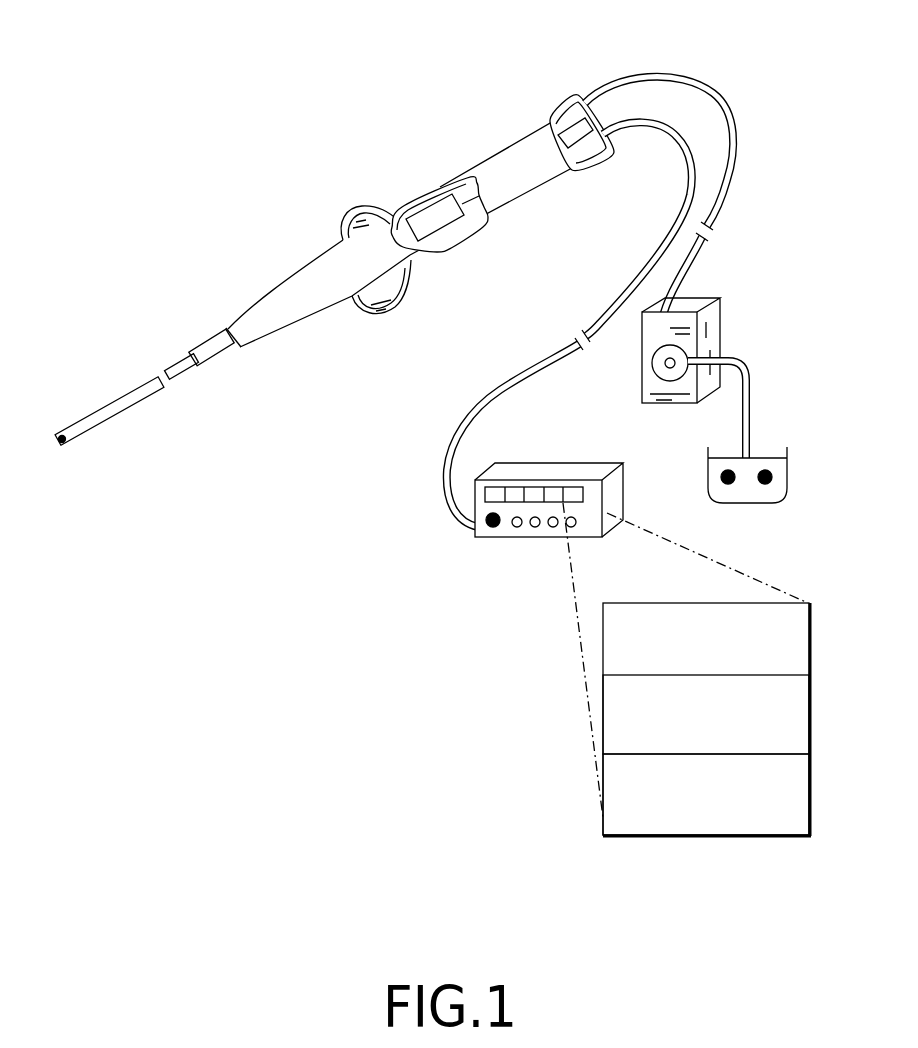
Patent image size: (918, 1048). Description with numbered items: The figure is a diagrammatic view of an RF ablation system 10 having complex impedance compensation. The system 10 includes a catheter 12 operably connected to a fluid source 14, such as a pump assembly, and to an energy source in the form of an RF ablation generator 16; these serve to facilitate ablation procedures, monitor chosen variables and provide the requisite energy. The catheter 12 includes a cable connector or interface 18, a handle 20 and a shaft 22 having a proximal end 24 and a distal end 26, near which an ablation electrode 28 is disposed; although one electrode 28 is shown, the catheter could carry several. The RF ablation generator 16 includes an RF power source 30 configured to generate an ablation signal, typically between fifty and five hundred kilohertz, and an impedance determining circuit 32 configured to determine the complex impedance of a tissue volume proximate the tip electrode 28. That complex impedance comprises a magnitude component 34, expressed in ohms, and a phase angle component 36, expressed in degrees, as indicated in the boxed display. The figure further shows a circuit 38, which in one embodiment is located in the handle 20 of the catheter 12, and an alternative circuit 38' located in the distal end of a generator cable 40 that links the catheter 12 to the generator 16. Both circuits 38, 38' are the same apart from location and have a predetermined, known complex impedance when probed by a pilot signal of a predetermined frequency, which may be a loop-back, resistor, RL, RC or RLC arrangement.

The system 10 is at (153, 159).
The catheter 12 is at (392, 147).
The fluid source 14 is at (734, 275).
The RF ablation generator 16 is at (579, 437).
The cable connector 18 is at (553, 92).
The handle 20 is at (465, 145).
The shaft 22 is at (170, 343).
The proximal end 24 is at (196, 398).
The distal end 26 is at (90, 471).
The ablation electrode 28 is at (54, 437).
The RF power source 30 is at (517, 470).
The impedance determining circuit 32 is at (593, 472).
The magnitude component 34 is at (803, 707).
The phase angle component 36 is at (803, 783).
The circuit 38 is at (435, 264).
The circuit 38' is at (585, 176).
The generator cable 40 is at (537, 342).